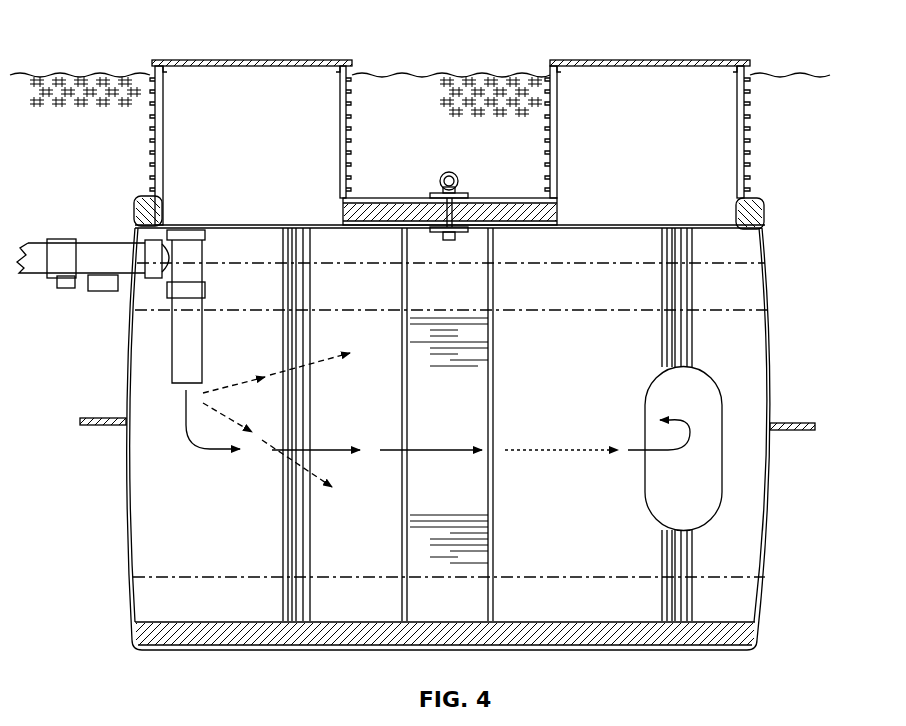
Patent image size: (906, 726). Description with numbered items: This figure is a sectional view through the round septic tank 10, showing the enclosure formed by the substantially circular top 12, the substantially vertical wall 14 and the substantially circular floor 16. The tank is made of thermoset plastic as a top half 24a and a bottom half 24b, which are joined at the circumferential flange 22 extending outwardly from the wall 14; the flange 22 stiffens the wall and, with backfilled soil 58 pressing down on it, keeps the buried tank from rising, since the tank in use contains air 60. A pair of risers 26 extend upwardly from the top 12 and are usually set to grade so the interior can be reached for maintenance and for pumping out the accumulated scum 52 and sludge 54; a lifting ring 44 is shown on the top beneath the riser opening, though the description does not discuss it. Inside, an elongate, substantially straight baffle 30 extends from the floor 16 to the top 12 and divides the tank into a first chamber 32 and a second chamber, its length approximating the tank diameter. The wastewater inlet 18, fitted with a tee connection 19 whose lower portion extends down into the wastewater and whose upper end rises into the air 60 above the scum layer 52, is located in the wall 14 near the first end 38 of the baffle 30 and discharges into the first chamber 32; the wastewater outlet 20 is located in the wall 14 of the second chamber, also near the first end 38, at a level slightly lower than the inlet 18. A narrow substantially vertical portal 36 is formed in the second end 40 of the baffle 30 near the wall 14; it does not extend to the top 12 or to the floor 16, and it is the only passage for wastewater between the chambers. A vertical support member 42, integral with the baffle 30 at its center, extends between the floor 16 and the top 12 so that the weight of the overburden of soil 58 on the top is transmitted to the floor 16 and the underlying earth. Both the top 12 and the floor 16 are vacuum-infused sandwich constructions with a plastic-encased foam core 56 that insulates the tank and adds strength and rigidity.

The septic tank 10 is at (258, 662).
The top 12 is at (512, 197).
The wall 14 is at (128, 493).
The floor 16 is at (598, 665).
The wastewater inlet 18 is at (62, 238).
The tee connection 19 is at (203, 343).
The wastewater outlet 20 is at (102, 292).
The circumferential flange 22 is at (795, 423).
The top half 24a is at (128, 373).
The bottom half 24b is at (128, 526).
The risers 26 is at (150, 150).
The baffle 30 is at (345, 405).
The first chamber 32 is at (163, 531).
The portal 36 is at (660, 512).
The first end 38 is at (140, 463).
The second end 40 is at (755, 470).
The vertical support member 42 is at (402, 481).
The lifting ring 44 is at (449, 170).
The scum 52 is at (558, 265).
The sludge 54 is at (238, 577).
The foam core 56 is at (755, 210).
The soil 58 is at (449, 80).
The air 60 is at (745, 246).